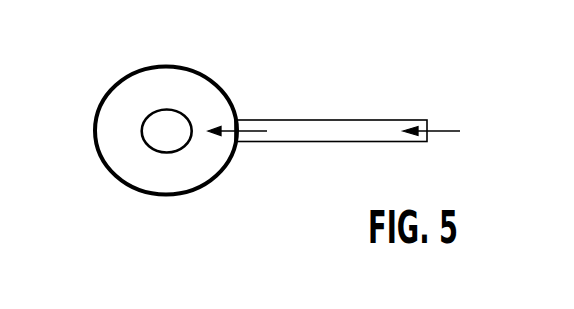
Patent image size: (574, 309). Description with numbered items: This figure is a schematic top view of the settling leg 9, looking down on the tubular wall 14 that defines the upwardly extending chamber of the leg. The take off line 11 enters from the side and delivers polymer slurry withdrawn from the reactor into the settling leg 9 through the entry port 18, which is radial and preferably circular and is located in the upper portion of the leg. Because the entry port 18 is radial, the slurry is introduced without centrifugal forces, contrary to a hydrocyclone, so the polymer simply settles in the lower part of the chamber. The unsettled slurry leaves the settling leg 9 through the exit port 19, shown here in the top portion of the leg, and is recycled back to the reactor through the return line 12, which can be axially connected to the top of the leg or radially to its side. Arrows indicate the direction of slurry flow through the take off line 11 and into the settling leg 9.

The settling leg 9 is at (84, 87).
The take off line 11 is at (332, 143).
The return line 12 is at (165, 110).
The tubular wall 14 is at (96, 128).
The entry port 18 is at (236, 121).
The exit port 19 is at (167, 132).